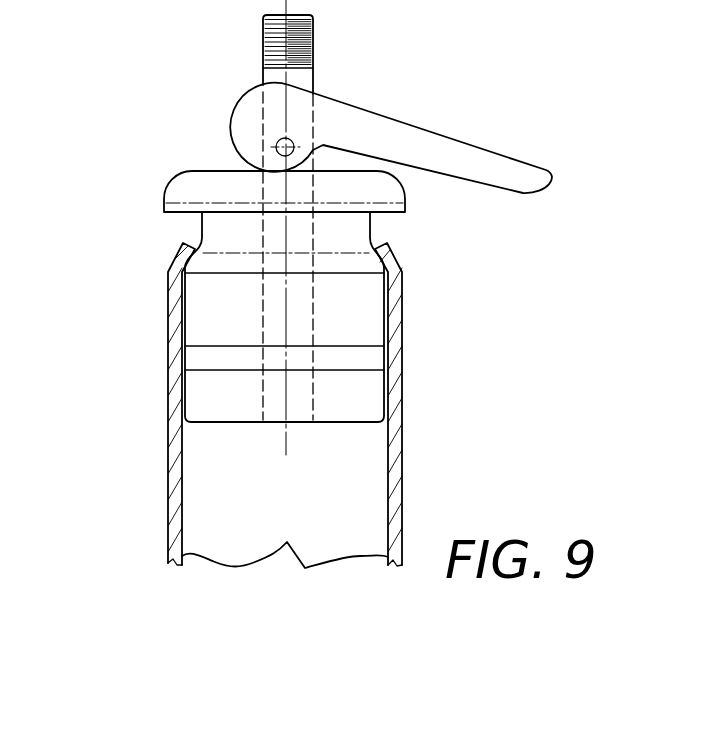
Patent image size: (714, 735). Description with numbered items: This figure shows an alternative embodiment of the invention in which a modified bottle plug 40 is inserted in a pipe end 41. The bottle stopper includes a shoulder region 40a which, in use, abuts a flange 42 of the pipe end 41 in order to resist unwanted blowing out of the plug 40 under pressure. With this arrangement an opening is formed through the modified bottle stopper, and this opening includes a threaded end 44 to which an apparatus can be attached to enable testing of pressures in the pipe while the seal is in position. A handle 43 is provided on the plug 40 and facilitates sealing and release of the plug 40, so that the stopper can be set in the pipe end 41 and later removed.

The modified bottle plug 40 is at (146, 170).
The shoulder region 40a is at (203, 233).
The pipe end 41 is at (169, 419).
The flange 42 is at (177, 254).
The handle 43 is at (522, 184).
The threaded end 44 is at (313, 46).